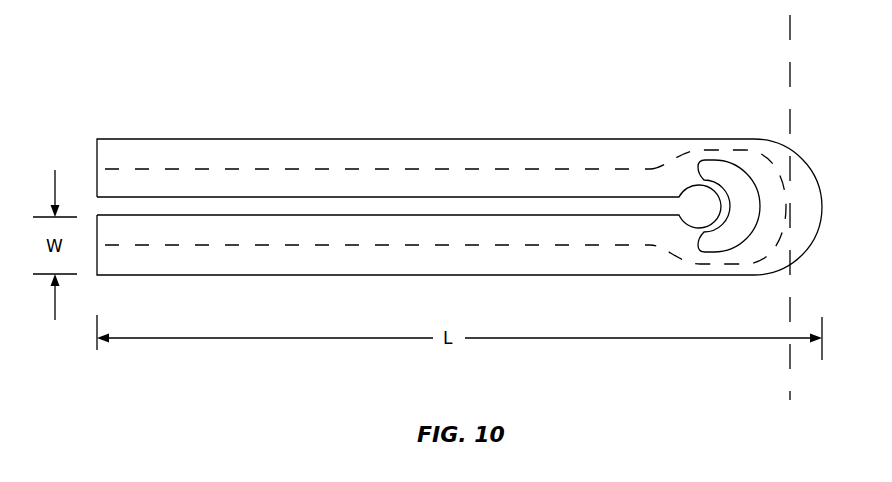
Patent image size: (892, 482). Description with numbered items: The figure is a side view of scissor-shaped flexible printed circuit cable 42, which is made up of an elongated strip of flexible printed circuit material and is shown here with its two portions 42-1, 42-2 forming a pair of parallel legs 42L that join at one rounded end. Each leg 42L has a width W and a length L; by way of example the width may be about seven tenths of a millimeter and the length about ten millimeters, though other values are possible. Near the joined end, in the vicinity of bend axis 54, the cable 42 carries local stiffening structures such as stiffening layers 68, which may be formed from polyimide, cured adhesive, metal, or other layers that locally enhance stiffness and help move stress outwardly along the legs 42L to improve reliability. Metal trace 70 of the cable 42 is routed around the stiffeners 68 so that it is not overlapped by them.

The flexible printed circuit cable 42 is at (419, 226).
The first portion of the flexible printed circuit cable 42-1 is at (97, 128).
The second portion of the flexible printed circuit cable 42-2 is at (97, 284).
The legs 42L is at (219, 147).
The bend axis 54 is at (792, 77).
The stiffening layers 68 is at (762, 198).
The metal trace 70 is at (609, 167).